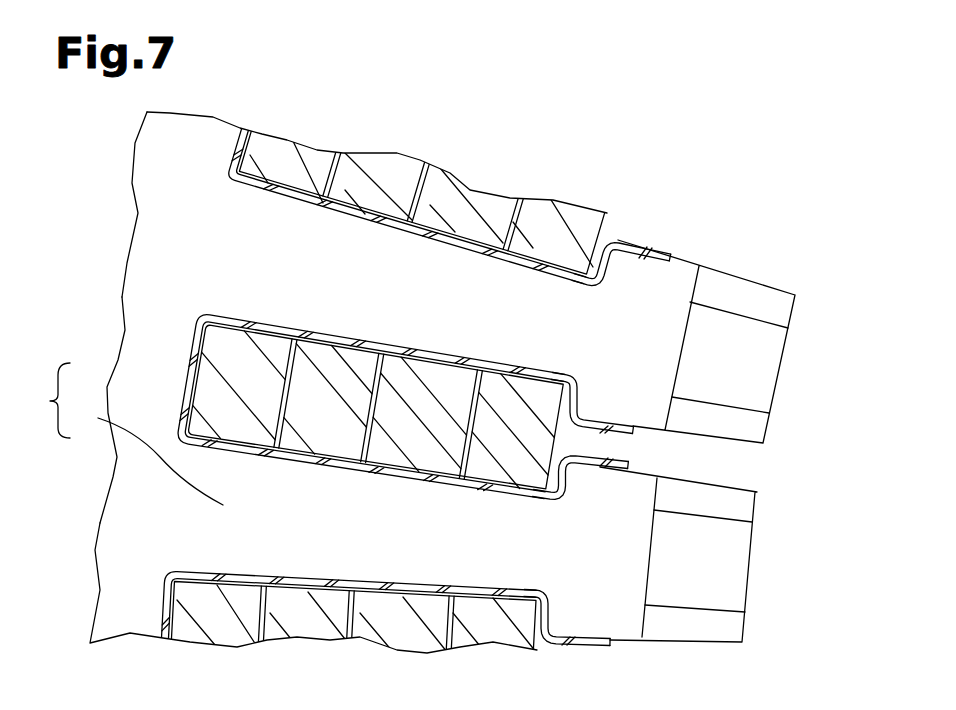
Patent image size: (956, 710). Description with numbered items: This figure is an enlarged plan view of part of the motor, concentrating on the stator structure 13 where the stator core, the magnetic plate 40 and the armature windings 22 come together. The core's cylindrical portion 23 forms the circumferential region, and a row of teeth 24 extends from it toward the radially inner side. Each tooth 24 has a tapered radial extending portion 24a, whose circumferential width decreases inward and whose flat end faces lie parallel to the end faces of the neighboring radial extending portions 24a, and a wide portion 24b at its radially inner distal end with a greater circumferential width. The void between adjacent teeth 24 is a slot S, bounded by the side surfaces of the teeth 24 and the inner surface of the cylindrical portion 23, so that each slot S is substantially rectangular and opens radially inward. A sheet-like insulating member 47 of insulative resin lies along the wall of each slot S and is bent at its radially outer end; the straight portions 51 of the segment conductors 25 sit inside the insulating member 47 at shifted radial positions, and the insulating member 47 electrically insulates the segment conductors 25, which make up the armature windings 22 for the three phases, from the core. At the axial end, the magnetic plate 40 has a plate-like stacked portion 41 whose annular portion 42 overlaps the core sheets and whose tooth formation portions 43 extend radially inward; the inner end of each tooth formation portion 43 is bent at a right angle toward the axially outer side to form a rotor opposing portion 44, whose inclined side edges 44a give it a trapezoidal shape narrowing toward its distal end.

The connector assembly 13 is at (762, 199).
The armature windings 22 is at (404, 400).
The cylindrical portion 23 is at (173, 213).
The teeth 24 is at (449, 189).
The radial extending portion 24a is at (340, 233).
The wide portion 24b is at (643, 277).
The segment conductors 25 is at (404, 400).
The magnetic plate 40 is at (747, 282).
The stacked portion 41 is at (119, 410).
The annular portion 42 is at (145, 386).
The tooth formation portion 43 is at (144, 455).
The rotor opposing portion 44 is at (765, 387).
The side edge 44a is at (745, 507).
The insulating member 47 is at (370, 473).
The straight portions 51 is at (403, 377).
The slot S is at (267, 325).